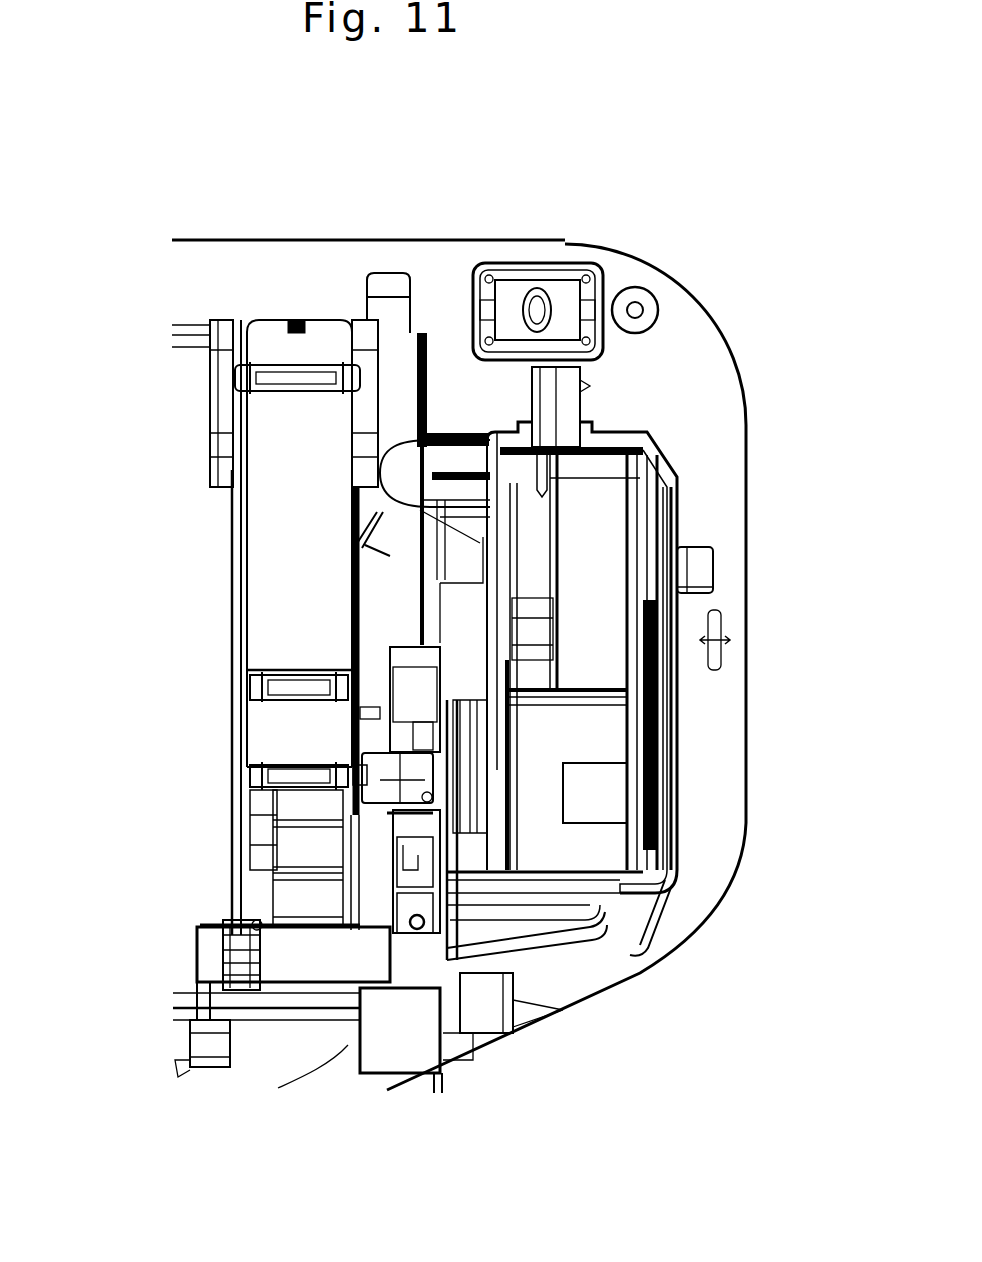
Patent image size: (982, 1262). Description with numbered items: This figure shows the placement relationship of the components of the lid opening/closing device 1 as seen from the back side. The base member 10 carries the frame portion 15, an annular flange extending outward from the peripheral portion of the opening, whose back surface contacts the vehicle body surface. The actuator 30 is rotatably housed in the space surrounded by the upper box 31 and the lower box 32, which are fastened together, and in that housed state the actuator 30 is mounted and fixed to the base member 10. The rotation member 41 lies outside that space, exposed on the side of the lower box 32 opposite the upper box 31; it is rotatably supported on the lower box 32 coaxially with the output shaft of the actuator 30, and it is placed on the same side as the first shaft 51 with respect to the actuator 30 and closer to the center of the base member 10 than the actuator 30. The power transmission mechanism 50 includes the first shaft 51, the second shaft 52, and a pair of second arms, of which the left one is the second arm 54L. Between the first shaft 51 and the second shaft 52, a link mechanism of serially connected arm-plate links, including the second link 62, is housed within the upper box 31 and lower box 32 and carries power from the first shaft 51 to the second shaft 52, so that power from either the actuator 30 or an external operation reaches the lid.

The lid opening/closing device 1 is at (697, 290).
The base member 10 is at (267, 270).
The frame portion 15 is at (707, 377).
The actuator 30 is at (647, 498).
The upper box 31 is at (670, 813).
The lower box 32 is at (512, 432).
The rotation member 41 is at (390, 883).
The power transmission mechanism 50 is at (210, 520).
The first shaft 51 is at (337, 763).
The second shaft 52 is at (313, 963).
The second arm 54L is at (220, 953).
The second link 62 is at (652, 725).